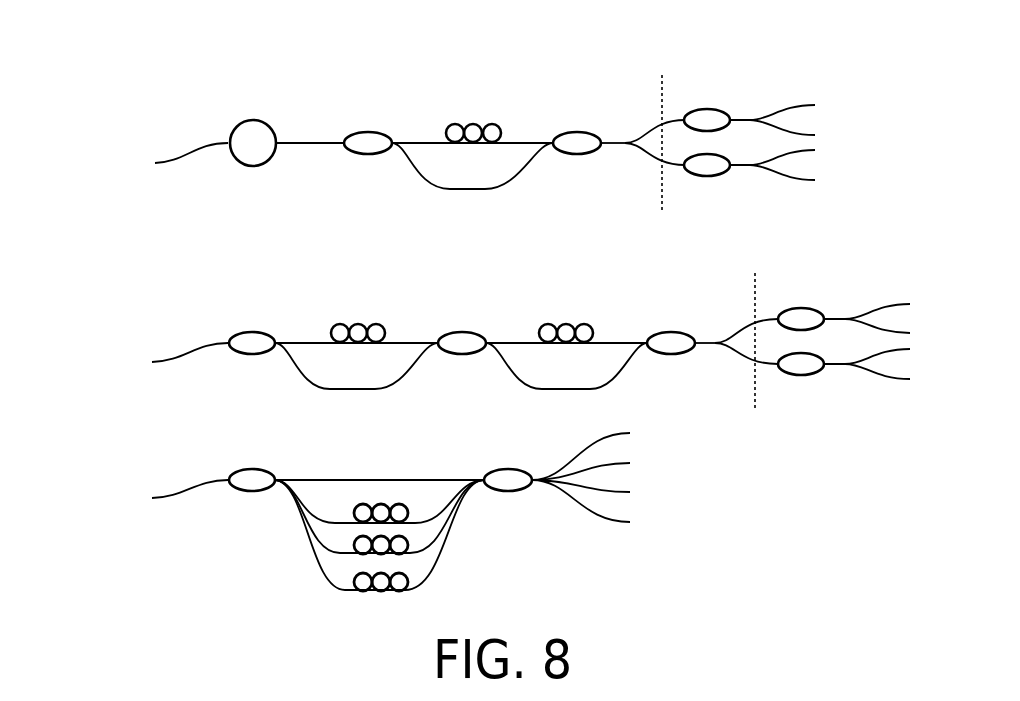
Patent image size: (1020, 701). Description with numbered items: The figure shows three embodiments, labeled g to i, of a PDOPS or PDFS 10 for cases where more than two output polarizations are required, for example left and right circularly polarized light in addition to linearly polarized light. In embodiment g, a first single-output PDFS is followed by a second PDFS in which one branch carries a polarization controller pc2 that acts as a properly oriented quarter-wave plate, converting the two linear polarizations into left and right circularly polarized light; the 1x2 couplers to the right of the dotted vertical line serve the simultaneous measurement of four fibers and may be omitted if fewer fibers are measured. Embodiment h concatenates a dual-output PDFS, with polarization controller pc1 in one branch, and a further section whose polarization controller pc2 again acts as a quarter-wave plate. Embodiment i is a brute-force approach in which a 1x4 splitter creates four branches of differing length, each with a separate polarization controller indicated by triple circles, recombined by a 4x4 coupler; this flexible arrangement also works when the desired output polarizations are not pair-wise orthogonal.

The PDOPS or PDFS 10 is at (856, 72).
The polarization-diverse fiber section PDFS is at (253, 173).
The polarization controller pc1 is at (358, 318).
The polarization controller pc2 is at (519, 219).
The 1×2 coupler 1x2 is at (754, 243).
The 1×4 splitter 1x4 is at (252, 465).
The 4×4 coupler 4x4 is at (508, 465).